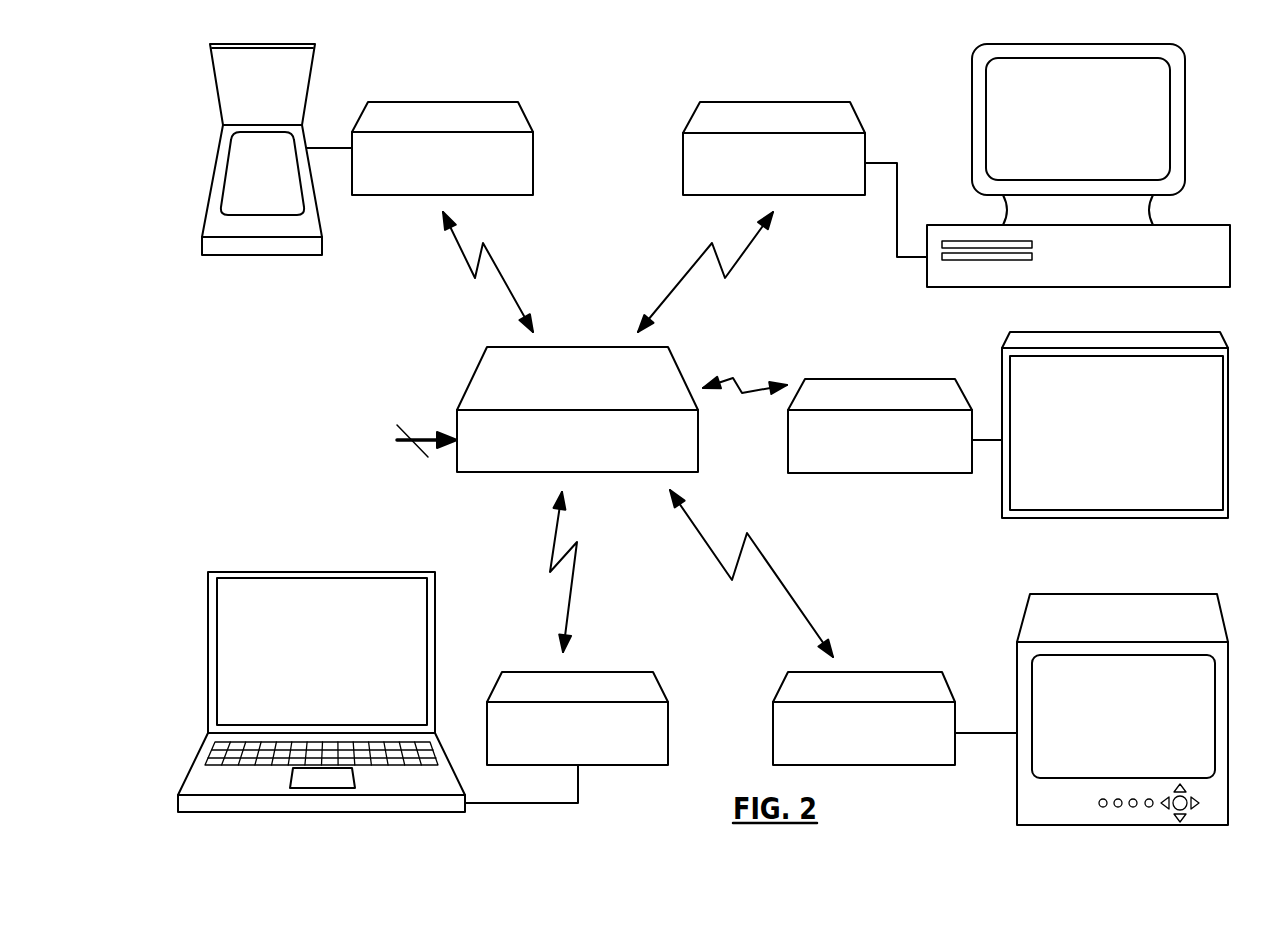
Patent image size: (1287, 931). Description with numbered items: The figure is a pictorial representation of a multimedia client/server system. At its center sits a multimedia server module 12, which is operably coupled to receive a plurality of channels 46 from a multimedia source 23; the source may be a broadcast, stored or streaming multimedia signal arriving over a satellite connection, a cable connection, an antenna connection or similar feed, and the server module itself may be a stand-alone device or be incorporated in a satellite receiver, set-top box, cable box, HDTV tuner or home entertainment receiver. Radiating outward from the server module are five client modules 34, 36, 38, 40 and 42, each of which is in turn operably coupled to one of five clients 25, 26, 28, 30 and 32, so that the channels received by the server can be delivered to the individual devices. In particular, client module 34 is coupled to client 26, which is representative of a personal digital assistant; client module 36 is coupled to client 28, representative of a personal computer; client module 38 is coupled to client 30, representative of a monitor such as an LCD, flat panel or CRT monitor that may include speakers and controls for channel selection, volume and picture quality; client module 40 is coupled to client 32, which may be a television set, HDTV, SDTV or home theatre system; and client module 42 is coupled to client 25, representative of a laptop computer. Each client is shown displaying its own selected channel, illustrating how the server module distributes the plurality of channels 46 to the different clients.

The multimedia server module 12 is at (577, 409).
The multimedia source 23 is at (323, 441).
The plurality of channels 46 is at (454, 474).
The client 25 is at (321, 675).
The client 26 is at (262, 170).
The client 28 is at (1078, 178).
The client 30 is at (1115, 438).
The client 32 is at (1122, 697).
The client module 34 is at (420, 217).
The client module 36 is at (782, 217).
The client module 38 is at (852, 425).
The client module 40 is at (843, 627).
The client module 42 is at (566, 647).